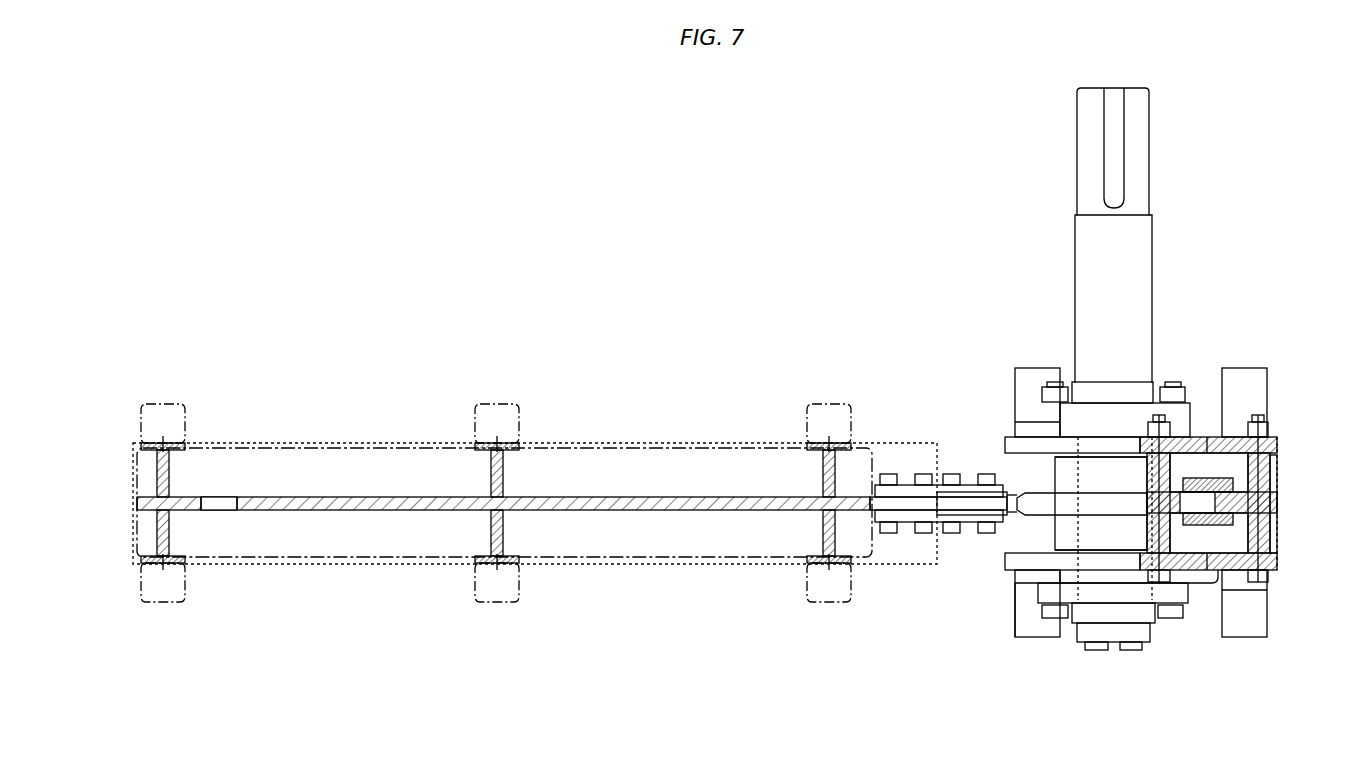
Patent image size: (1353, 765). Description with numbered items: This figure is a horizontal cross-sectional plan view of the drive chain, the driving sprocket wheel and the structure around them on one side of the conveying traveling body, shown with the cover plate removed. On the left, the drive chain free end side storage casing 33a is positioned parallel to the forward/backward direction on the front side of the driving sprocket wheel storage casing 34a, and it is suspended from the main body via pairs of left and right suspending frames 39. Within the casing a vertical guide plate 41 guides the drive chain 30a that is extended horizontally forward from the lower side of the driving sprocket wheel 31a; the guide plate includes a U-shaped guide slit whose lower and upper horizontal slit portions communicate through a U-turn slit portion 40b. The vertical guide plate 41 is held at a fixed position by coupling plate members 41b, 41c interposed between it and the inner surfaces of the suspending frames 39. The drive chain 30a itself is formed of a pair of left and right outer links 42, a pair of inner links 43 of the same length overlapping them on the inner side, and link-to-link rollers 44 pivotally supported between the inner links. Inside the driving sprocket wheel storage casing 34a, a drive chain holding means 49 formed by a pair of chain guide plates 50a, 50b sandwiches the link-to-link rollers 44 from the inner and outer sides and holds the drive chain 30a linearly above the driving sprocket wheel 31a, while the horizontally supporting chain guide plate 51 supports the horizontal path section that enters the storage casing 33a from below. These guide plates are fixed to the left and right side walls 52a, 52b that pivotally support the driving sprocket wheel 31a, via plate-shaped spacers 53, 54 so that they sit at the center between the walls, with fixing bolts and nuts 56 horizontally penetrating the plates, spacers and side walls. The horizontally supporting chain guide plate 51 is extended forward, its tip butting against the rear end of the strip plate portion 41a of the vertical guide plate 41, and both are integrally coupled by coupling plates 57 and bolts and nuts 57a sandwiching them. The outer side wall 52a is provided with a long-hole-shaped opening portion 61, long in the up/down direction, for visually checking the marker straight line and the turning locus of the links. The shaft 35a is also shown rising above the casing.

The drive chain free end side storage casing 33a is at (348, 438).
The vertical guide plate 41 is at (649, 492).
The U-turn slit portion 40b is at (222, 508).
The coupling plate member 41c is at (170, 477).
The coupling plate member 41b is at (160, 533).
The suspending frame 39 is at (173, 440).
The coupling plate 57 is at (880, 490).
The bolt and nut 57a is at (925, 473).
The strip plate portion 41a is at (906, 500).
The horizontally supporting chain guide plate 51 is at (968, 500).
The driving sprocket wheel 31a is at (1072, 500).
The drive shaft 35a is at (1099, 262).
The inner side wall 52b is at (1173, 463).
The fixing bolts and nuts 56 is at (1146, 462).
The chain guide plate 50b is at (1280, 504).
The drive chain holding means 49 is at (1235, 520).
The chain guide plate 50a is at (1210, 476).
The plate-shaped spacer 53 is at (1147, 468).
The drive chain 30a is at (1218, 487).
The outer link 42 is at (1232, 428).
The inner link 43 is at (1252, 447).
The plate-shaped spacer 54 is at (1274, 470).
The long-hole-shaped opening portion 61 is at (1250, 575).
The link-to-link roller 44 is at (1193, 578).
The outer side wall 52a is at (1120, 590).
The driving sprocket wheel storage casing 34a is at (1053, 618).